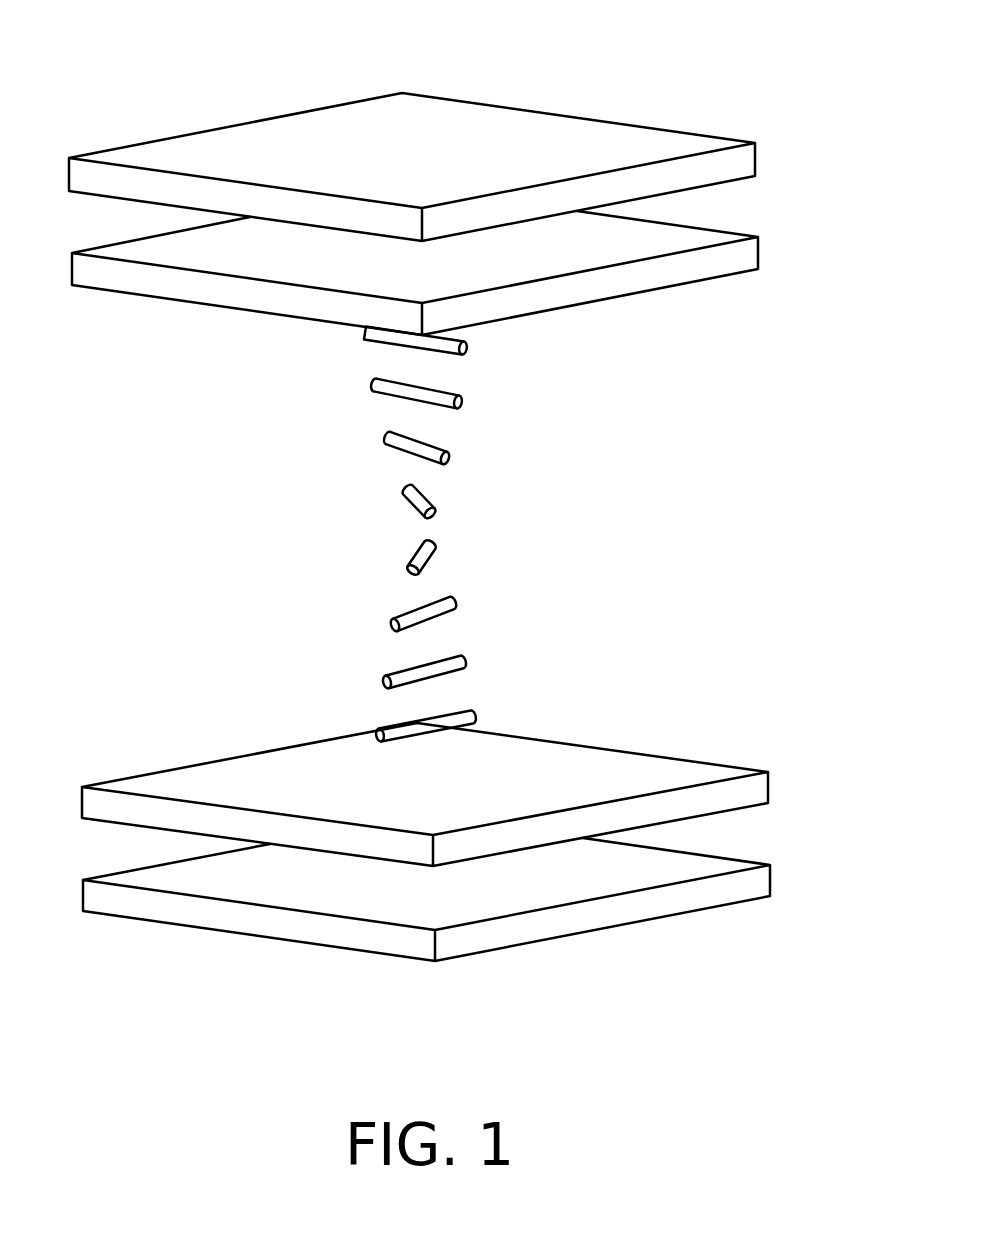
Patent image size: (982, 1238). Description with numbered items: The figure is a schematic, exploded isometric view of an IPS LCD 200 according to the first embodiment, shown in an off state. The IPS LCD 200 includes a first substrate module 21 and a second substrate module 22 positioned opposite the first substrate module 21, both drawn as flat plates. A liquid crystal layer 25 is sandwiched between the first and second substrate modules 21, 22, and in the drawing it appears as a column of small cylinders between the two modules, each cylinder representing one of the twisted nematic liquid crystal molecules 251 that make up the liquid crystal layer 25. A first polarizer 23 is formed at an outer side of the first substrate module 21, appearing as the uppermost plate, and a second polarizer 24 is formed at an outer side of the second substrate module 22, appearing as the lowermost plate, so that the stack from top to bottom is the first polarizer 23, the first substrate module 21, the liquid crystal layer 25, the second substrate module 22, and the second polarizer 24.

The IPS LCD 200 is at (433, 49).
The first polarizer 23 is at (710, 172).
The first substrate module 21 is at (660, 273).
The liquid crystal layer 25 is at (420, 535).
The twisted nematic liquid crystal molecules 251 is at (415, 448).
The second substrate module 22 is at (722, 798).
The second polarizer 24 is at (672, 900).